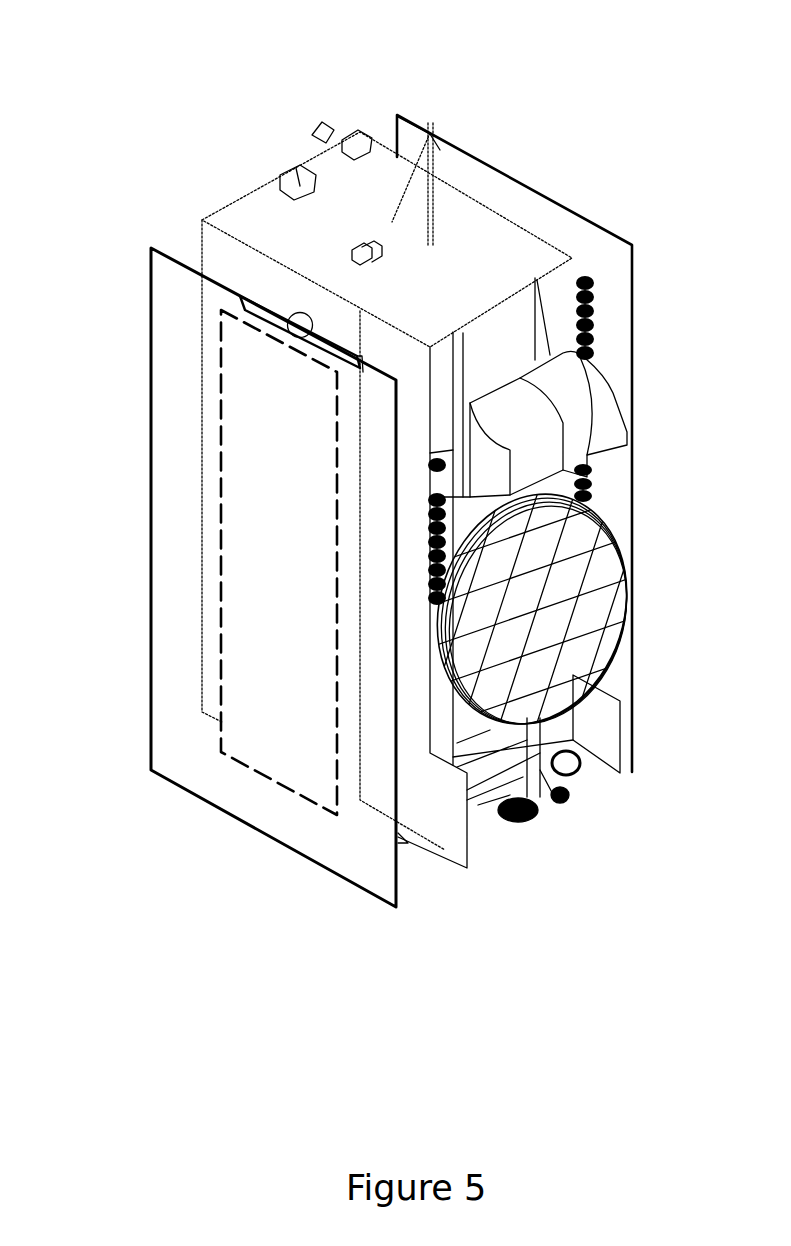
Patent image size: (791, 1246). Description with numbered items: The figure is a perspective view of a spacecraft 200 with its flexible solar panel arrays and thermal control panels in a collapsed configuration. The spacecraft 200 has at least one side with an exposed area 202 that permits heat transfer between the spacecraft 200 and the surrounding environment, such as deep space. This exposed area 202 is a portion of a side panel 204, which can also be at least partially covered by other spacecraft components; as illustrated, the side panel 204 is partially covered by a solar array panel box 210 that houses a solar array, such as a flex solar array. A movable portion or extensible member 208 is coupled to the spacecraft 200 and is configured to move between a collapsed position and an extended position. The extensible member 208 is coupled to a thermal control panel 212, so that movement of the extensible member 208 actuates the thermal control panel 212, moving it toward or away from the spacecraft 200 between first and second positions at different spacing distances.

The spacecraft 200 is at (655, 75).
The exposed area 202 is at (208, 267).
The side panel 204 is at (213, 245).
The extensible member 208 is at (297, 322).
The solar array panel box 210 is at (278, 600).
The thermal control panel 212 is at (151, 352).